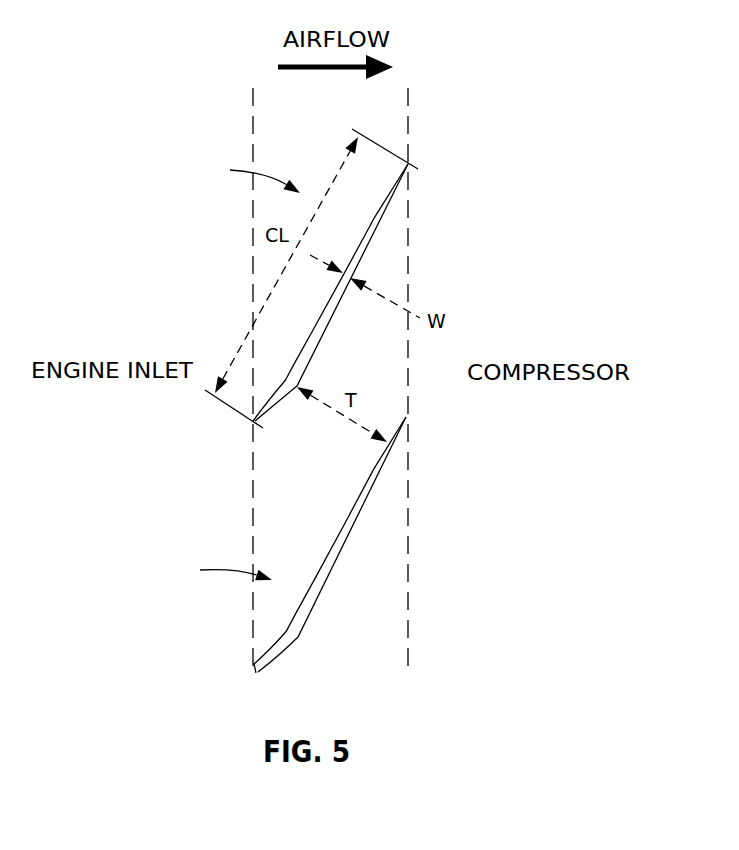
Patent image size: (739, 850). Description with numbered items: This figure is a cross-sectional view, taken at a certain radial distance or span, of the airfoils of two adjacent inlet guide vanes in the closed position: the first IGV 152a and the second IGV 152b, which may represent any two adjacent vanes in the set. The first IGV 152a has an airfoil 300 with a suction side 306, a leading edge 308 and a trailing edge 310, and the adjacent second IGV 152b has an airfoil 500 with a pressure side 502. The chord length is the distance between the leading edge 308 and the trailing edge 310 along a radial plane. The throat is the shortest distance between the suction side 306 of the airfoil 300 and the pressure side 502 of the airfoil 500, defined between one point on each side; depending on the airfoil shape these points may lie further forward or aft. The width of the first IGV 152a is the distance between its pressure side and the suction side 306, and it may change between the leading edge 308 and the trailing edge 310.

The first inlet guide vane 152a is at (237, 176).
The second inlet guide vane 152b is at (212, 570).
The airfoil 300 is at (339, 303).
The suction side 306 is at (362, 262).
The leading edge 308 is at (253, 420).
The trailing edge 310 is at (410, 163).
The airfoil 500 is at (332, 545).
The pressure side 502 is at (327, 547).